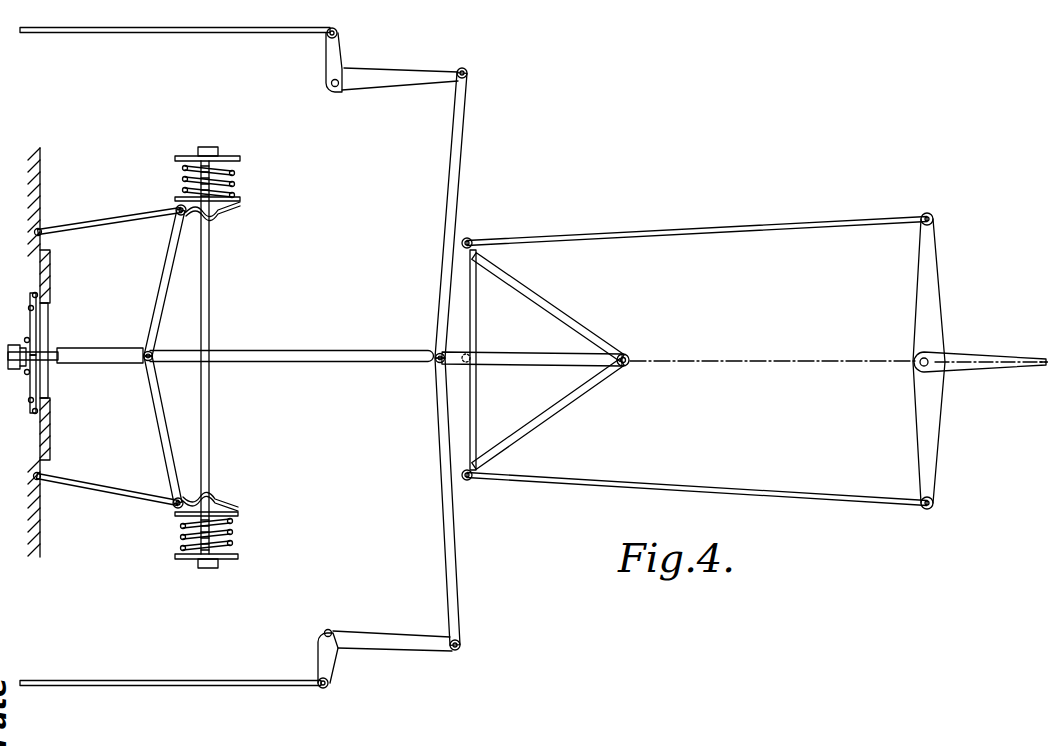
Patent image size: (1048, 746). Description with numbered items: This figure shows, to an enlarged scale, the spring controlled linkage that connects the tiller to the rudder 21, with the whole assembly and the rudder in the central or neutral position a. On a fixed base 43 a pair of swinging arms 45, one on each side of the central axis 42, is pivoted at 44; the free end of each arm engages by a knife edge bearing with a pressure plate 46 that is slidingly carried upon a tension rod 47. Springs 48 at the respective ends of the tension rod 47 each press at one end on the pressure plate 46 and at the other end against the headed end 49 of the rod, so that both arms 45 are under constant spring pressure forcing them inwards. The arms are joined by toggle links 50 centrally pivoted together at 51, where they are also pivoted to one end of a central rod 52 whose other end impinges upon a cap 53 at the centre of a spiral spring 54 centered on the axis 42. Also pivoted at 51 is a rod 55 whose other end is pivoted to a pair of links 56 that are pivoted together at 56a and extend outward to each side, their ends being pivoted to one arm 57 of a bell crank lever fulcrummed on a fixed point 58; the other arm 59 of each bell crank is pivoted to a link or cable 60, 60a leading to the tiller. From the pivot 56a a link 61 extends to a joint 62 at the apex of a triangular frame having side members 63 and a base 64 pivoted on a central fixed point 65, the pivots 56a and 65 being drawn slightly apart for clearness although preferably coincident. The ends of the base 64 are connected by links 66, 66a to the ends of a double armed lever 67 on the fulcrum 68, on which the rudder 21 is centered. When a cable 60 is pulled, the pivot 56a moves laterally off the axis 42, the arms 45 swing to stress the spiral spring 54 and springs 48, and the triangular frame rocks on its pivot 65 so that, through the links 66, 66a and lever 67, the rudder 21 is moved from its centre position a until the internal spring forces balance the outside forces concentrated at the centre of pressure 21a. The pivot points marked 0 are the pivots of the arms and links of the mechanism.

The pivot points 0 is at (144, 212).
The rudder 21 is at (982, 366).
The centre of pressure 21a is at (982, 352).
The central axis 42 is at (778, 364).
The fixed base 43 is at (42, 174).
The pivot 44 is at (36, 230).
The swinging arms 45 is at (116, 227).
The pressure plate 46 is at (232, 205).
The tension rod 47 is at (211, 408).
The springs 48 is at (236, 178).
The headed end 49 is at (226, 156).
The toggle links 50 is at (170, 278).
The central pivot 51 is at (155, 351).
The central rod 52 is at (97, 364).
The cap 53 is at (24, 340).
The spiral spring 54 is at (28, 402).
The rod 55 is at (352, 362).
The pair of links 56 is at (462, 160).
The pivot 56a is at (437, 355).
The bell crank lever arm 57 is at (406, 74).
The fixed point 58 is at (336, 88).
The bell crank lever arm 59 is at (330, 60).
The link or cable 60 is at (148, 28).
The link or cable 60a is at (232, 680).
The link 61 is at (534, 353).
The joint 62 is at (628, 366).
The side members 63 is at (558, 311).
The base 64 is at (474, 300).
The central fixed point 65 is at (469, 354).
The link 66 is at (773, 222).
The link 66a is at (834, 497).
The double armed lever 67 is at (932, 275).
The fulcrum 68 is at (916, 368).
The central or neutral position a is at (1036, 368).